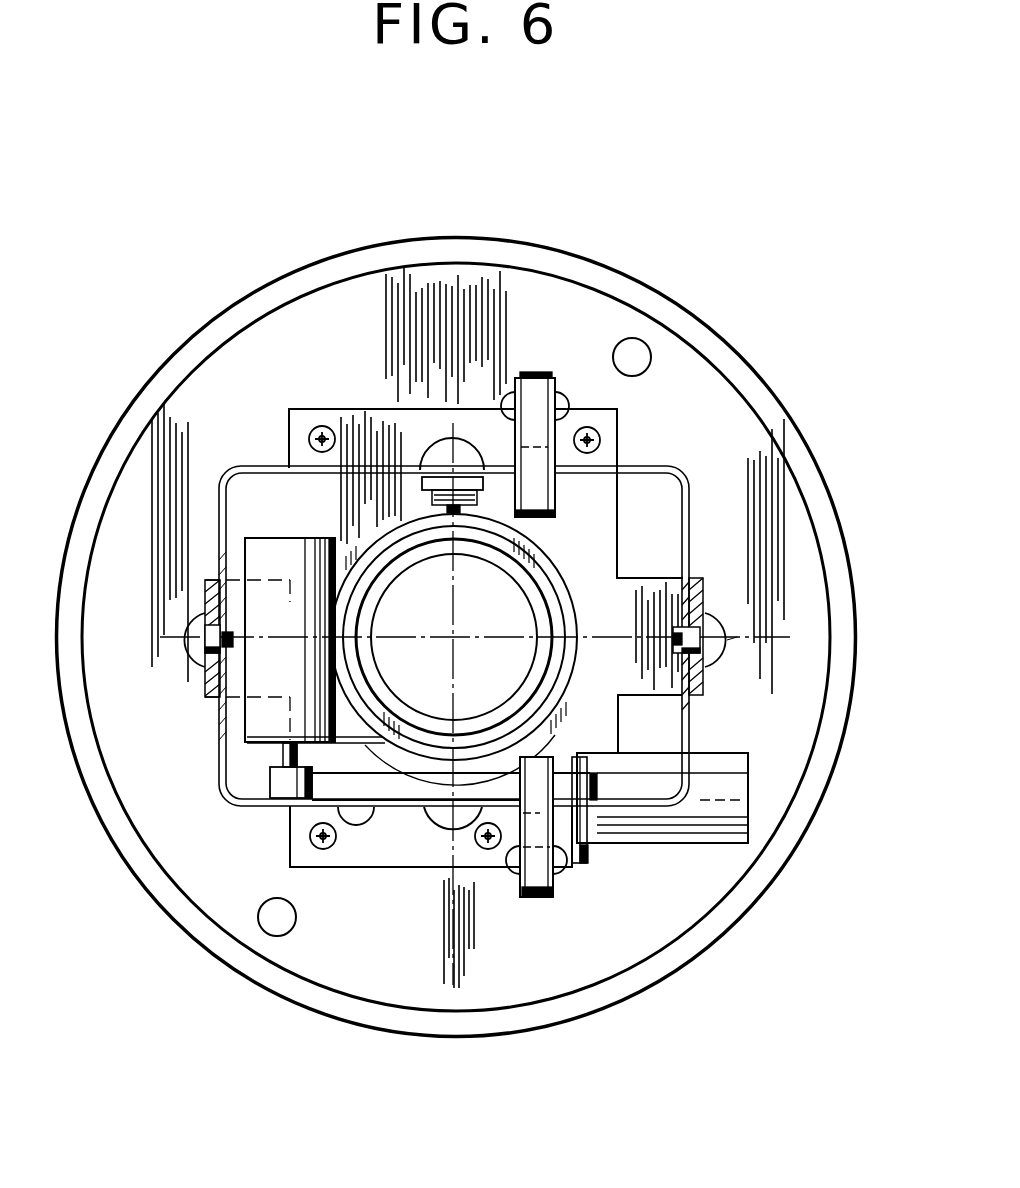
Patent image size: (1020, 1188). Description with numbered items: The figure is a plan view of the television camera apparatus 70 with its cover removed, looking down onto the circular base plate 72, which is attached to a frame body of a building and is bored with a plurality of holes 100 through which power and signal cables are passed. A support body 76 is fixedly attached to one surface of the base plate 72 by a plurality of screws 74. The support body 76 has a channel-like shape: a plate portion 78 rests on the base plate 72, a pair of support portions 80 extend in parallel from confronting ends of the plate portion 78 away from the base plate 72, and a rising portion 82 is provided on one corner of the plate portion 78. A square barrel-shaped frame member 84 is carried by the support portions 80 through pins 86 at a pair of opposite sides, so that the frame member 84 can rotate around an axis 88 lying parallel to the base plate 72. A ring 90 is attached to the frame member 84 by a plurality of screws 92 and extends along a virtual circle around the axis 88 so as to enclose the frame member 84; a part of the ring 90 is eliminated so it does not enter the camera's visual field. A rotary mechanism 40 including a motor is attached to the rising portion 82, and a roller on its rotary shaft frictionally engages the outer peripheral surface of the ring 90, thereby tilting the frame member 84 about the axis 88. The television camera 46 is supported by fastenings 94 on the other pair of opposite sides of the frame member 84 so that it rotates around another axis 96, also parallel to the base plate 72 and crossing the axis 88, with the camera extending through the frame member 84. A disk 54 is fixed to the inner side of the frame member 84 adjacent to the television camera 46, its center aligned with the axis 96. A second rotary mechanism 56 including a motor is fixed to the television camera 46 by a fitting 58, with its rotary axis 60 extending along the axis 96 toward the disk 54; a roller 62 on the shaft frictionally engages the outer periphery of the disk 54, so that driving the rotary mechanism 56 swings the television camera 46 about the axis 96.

The rotary mechanism 40 is at (652, 830).
The television camera 46 is at (568, 605).
The disk 54 is at (327, 790).
The rotary mechanism 56 is at (260, 665).
The fitting 58 is at (247, 742).
The rotary axis 60 is at (287, 752).
The roller 62 is at (277, 783).
The television camera apparatus 70 is at (716, 318).
The base plate 72 is at (637, 938).
The screws 74 is at (316, 428).
The support body 76 is at (368, 868).
The plate portion 78 is at (370, 415).
The support portions 80 is at (213, 580).
The rising portion 82 is at (595, 855).
The frame member 84 is at (684, 466).
The pins 86 is at (202, 627).
The axis 88 is at (737, 637).
The ring 90 is at (542, 897).
The screws 92 is at (570, 395).
The fastenings 94 is at (447, 445).
The axis 96 is at (453, 660).
The holes 100 is at (632, 345).